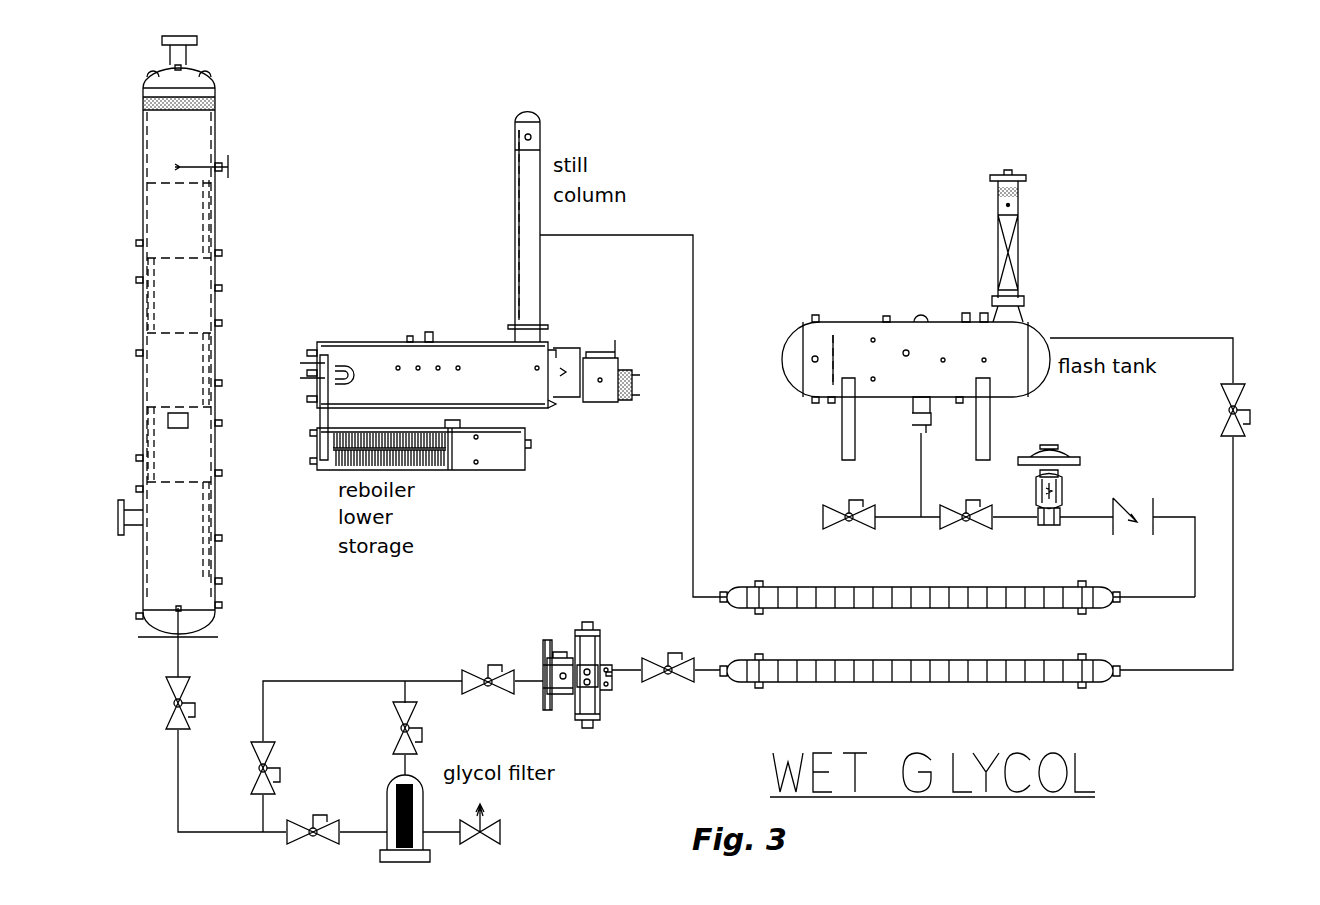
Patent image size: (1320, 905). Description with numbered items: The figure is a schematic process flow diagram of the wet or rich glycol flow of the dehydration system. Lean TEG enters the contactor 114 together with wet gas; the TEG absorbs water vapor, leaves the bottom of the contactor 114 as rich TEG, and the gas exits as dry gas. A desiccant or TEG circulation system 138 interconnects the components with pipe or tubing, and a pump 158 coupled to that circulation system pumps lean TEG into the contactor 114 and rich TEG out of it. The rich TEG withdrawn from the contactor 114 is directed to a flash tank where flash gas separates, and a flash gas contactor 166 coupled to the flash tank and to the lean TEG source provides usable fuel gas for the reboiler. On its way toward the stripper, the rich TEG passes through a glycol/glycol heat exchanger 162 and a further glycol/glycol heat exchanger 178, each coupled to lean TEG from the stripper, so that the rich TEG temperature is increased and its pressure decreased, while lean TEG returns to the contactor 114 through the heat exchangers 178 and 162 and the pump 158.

The contactor 114 is at (231, 356).
The TEG circulation system 138 is at (470, 385).
The pump 158 is at (573, 660).
The glycol/glycol heat exchanger 162 is at (920, 659).
The flash gas contactor 166 is at (1061, 246).
The glycol/glycol heat exchanger 178 is at (957, 583).